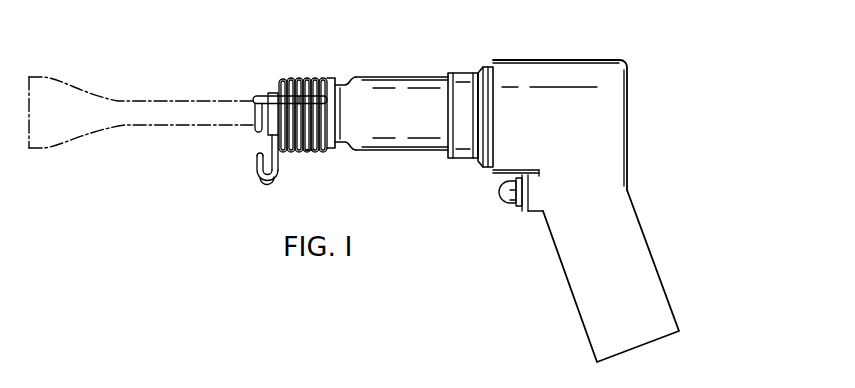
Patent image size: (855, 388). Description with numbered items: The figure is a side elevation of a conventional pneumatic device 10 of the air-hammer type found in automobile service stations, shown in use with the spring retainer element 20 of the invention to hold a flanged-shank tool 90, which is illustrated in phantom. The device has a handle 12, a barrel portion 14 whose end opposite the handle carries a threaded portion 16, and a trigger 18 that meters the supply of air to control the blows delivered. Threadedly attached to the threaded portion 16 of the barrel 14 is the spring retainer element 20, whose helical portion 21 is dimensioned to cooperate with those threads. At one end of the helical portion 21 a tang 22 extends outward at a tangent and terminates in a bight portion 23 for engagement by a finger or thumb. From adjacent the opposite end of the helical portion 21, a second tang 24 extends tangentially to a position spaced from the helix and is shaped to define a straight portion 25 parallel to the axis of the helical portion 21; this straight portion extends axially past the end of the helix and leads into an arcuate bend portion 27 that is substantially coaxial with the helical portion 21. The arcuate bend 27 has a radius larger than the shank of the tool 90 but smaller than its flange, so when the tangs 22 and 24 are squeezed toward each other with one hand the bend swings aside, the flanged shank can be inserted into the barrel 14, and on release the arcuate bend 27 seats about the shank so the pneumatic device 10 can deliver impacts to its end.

The pneumatic device 10 is at (640, 92).
The handle 12 is at (647, 285).
The barrel portion 14 is at (409, 82).
The threaded portion 16 is at (329, 78).
The trigger 18 is at (508, 197).
The spring retainer element 20 is at (292, 63).
The helical portion 21 is at (307, 153).
The tang 22 is at (251, 162).
The bight portion 23 is at (263, 191).
The tang 24 is at (302, 100).
The straight portion 25 is at (263, 96).
The arcuate bend portion 27 is at (250, 131).
The tool 90 is at (135, 84).